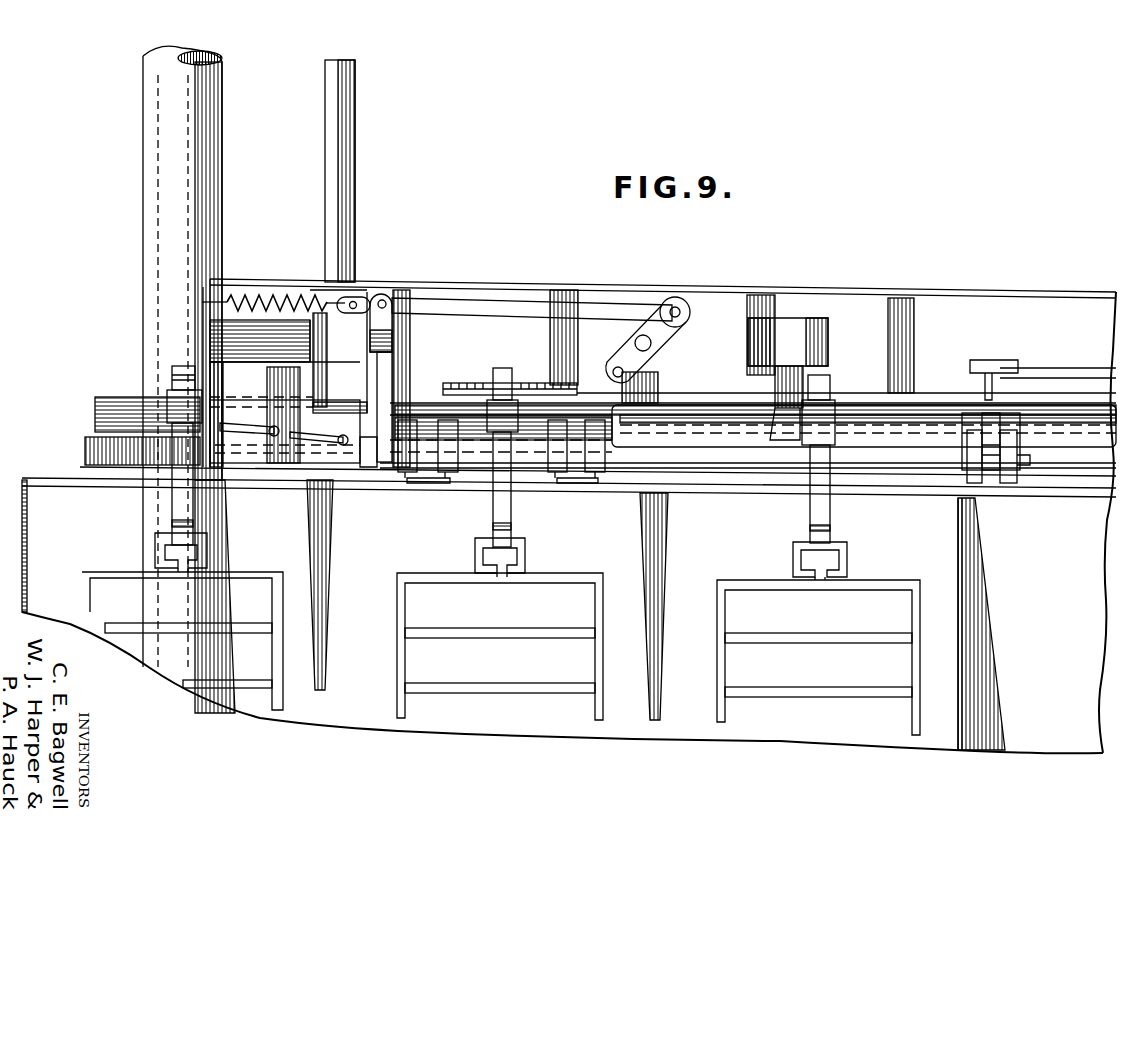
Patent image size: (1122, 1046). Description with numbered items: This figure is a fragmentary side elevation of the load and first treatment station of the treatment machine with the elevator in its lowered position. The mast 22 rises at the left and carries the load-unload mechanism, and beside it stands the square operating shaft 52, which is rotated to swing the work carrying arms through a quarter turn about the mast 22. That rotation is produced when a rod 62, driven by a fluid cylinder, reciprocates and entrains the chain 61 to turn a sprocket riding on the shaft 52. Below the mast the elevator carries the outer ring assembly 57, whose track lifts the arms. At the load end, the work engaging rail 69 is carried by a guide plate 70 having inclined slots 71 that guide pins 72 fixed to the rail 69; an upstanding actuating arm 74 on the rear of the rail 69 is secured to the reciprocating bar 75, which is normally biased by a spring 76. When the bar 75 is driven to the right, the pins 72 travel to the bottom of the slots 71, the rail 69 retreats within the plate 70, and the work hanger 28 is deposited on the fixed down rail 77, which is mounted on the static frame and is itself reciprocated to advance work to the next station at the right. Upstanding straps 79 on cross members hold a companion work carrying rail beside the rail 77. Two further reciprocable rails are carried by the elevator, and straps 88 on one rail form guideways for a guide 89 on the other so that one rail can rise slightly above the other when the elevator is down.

The mast 22 is at (145, 178).
The square operating shaft 52 is at (345, 170).
The spring 76 is at (272, 295).
The reciprocating rod or bar 75 is at (482, 312).
The upstanding actuating arm 74 is at (376, 364).
The fixed down rail 77 is at (117, 402).
The outer ring assembly 57 is at (95, 449).
The inclined slots 71 is at (246, 426).
The pins 72 is at (345, 434).
The guide plate 70 is at (268, 462).
The work engaging rail 69 is at (368, 448).
The chain 61 is at (540, 384).
The rod 62 is at (680, 392).
The upstanding straps 79 is at (448, 455).
The work hanger 28 is at (175, 498).
The straps 88 is at (975, 440).
The guide 89 is at (990, 418).